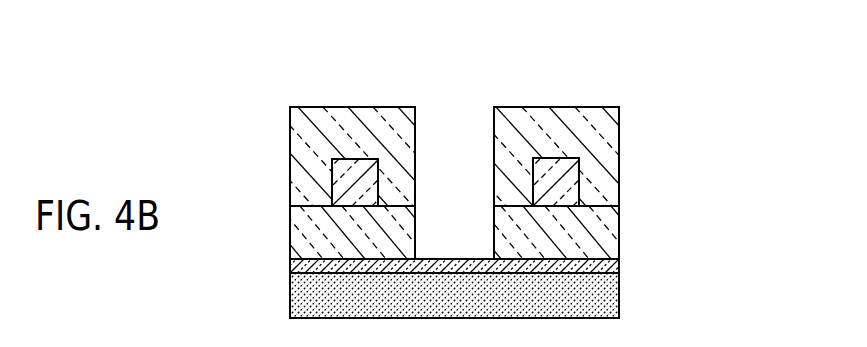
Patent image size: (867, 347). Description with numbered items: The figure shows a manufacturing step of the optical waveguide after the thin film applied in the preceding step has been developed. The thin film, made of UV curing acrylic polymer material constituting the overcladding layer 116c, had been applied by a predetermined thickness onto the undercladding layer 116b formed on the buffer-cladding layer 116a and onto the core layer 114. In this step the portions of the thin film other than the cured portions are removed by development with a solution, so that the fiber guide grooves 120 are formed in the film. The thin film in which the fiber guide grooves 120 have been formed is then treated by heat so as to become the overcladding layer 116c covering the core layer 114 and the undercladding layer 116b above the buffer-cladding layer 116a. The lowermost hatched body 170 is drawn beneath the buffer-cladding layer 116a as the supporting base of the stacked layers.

The fiber guide groove 120 is at (494, 168).
The overcladding layer 116c is at (588, 120).
The core layer 114 is at (567, 183).
The undercladding layer 116b is at (603, 212).
The buffer-cladding layer 116a is at (605, 266).
The substrate 170 is at (605, 305).